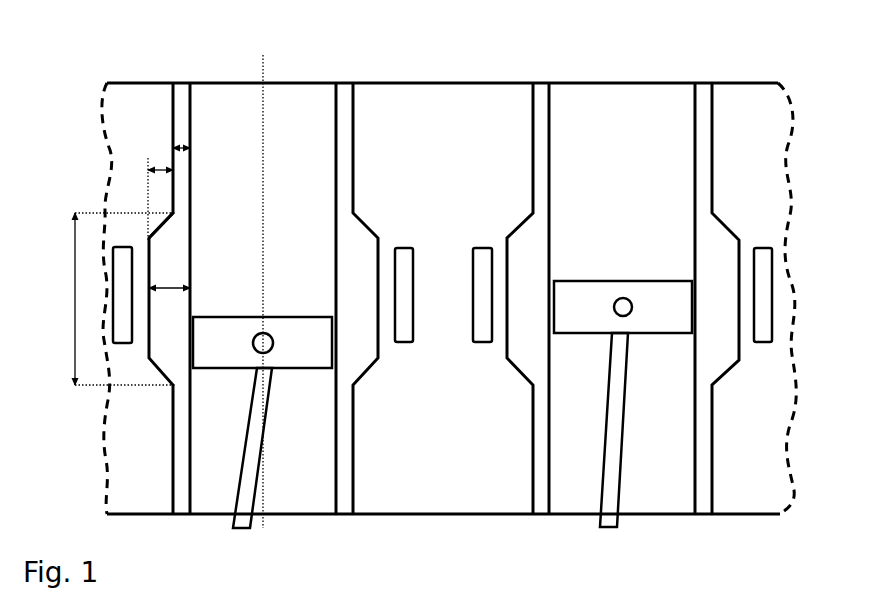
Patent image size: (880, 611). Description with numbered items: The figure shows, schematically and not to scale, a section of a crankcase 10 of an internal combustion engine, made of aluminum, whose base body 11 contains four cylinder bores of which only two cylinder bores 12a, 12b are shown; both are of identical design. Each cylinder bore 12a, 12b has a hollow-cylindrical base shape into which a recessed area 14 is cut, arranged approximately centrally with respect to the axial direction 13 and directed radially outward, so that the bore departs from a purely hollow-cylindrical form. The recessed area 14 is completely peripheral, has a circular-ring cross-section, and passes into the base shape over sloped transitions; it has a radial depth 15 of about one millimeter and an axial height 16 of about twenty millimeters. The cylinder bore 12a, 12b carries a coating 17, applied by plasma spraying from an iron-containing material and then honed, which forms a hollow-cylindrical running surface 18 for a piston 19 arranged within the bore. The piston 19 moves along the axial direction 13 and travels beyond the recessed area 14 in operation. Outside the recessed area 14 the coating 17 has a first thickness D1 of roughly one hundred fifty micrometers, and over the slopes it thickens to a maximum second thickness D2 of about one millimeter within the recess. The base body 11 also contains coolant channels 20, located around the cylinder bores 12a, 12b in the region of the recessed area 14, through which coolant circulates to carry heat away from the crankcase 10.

The crankcase 10 is at (664, 61).
The base body 11 is at (460, 93).
The cylinder bore 12a is at (215, 105).
The cylinder bore 12b is at (641, 106).
The axial direction 13 is at (262, 70).
The recessed area 14 is at (149, 255).
The depth 15 is at (163, 168).
The height 16 is at (75, 285).
The coating 17 is at (342, 95).
The running surface 18 is at (336, 128).
The piston 19 is at (278, 352).
The coolant channels 20 is at (118, 343).
The first thickness D1 is at (181, 145).
The second thickness D2 is at (172, 288).